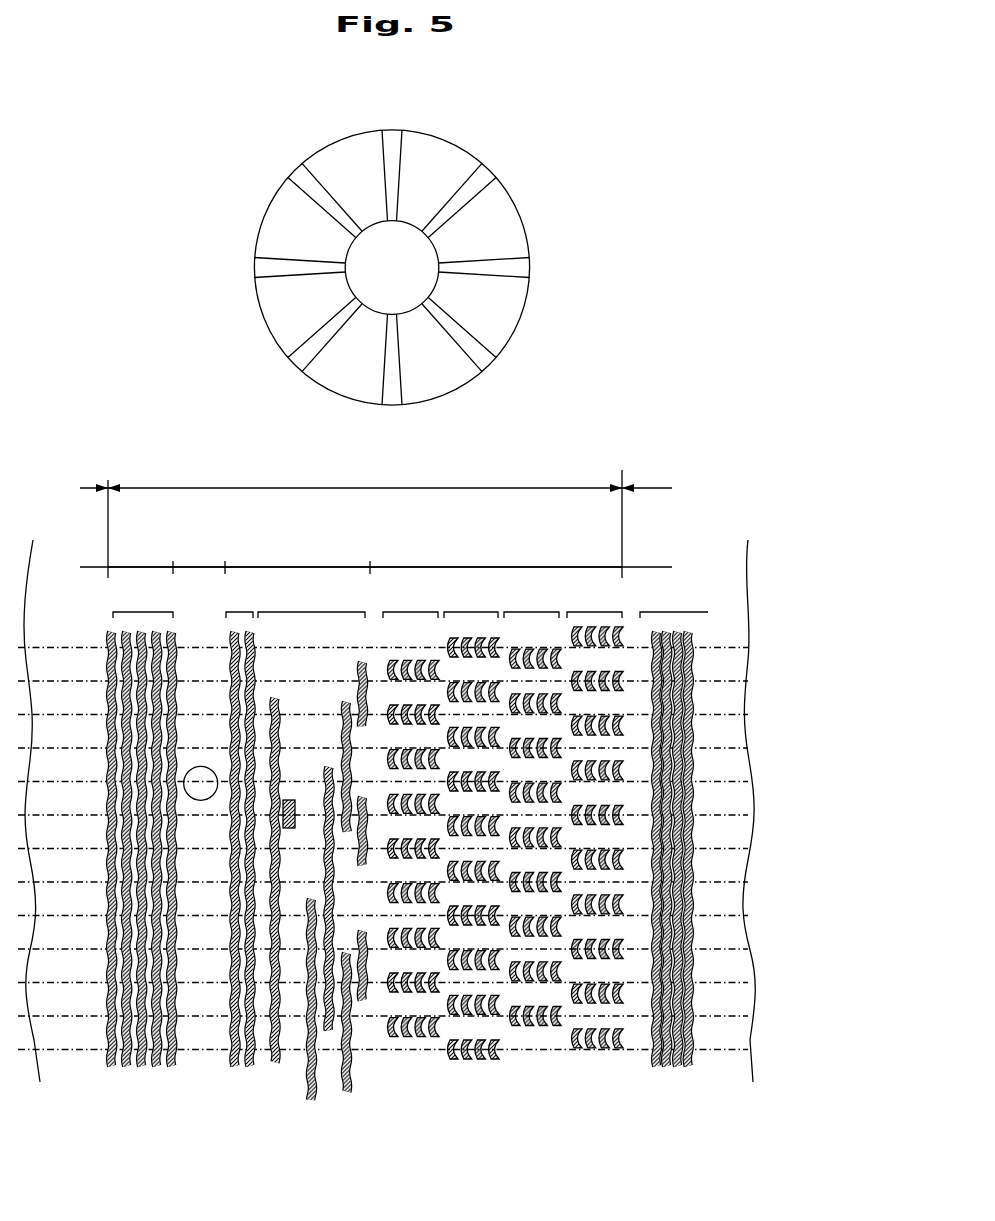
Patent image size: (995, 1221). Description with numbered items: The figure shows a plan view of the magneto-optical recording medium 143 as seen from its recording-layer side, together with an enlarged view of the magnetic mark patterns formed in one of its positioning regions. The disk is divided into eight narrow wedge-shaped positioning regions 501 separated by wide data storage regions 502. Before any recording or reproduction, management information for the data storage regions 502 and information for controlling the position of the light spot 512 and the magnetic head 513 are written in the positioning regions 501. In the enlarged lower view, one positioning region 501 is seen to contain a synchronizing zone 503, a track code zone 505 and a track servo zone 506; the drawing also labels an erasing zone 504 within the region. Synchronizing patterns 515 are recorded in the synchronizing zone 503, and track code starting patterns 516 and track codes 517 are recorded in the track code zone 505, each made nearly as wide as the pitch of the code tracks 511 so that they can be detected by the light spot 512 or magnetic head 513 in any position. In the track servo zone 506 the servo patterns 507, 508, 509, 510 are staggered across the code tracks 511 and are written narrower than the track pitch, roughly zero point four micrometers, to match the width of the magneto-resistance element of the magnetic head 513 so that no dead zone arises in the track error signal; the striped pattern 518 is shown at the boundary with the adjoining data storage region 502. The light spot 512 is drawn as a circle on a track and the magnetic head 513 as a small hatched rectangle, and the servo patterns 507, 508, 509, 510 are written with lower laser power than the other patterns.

The magneto-optical recording medium 143 is at (508, 218).
The positioning region 501 is at (394, 135).
The data storage region 502 is at (442, 152).
The synchronizing zone 503 is at (135, 567).
The erasing zone 504 is at (182, 567).
The track code zone 505 is at (400, 567).
The track servo zone 506 is at (307, 567).
The servo pattern 507 is at (410, 604).
The servo pattern 508 is at (473, 604).
The servo pattern 509 is at (536, 604).
The servo pattern 510 is at (601, 604).
The code track 511 is at (92, 648).
The light spot 512 is at (196, 771).
The magnetic head 513 is at (290, 800).
The synchronizing pattern 515 is at (142, 604).
The track code starting pattern 516 is at (232, 604).
The track code 517 is at (323, 604).
The track servo marks 518 is at (687, 610).